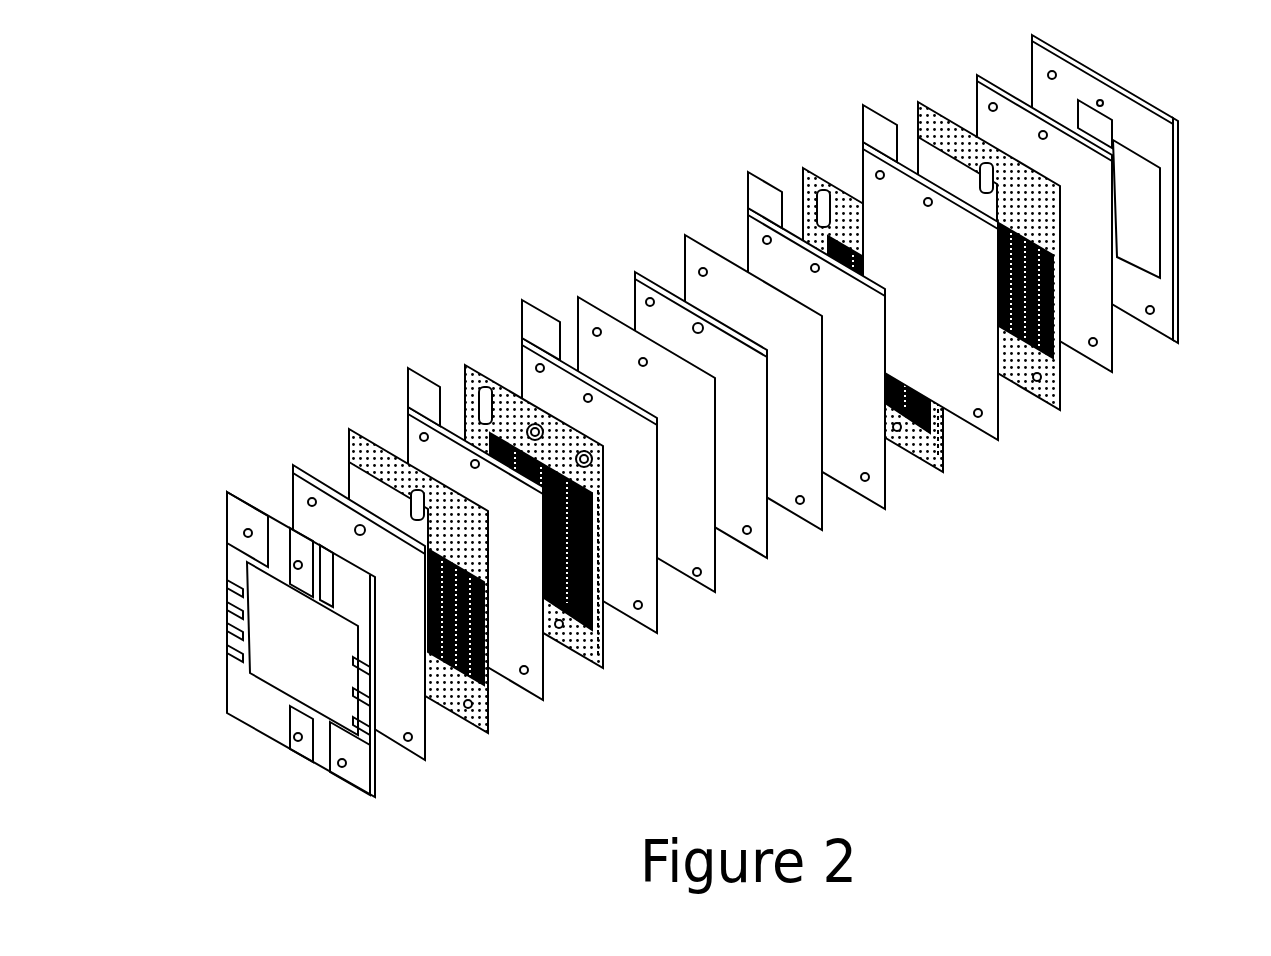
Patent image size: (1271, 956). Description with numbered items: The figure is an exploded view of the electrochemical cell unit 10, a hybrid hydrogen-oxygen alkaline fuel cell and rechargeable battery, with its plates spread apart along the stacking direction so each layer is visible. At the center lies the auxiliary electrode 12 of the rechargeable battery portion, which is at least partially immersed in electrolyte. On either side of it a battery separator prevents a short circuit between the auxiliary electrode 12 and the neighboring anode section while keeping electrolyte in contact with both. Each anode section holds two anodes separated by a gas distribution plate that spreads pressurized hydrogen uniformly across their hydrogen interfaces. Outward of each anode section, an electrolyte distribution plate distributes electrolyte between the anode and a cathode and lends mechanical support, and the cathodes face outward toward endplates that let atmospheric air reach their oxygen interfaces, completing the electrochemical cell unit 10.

The electrochemical cell unit 10 is at (505, 215).
The auxiliary electrode 12 is at (664, 387).